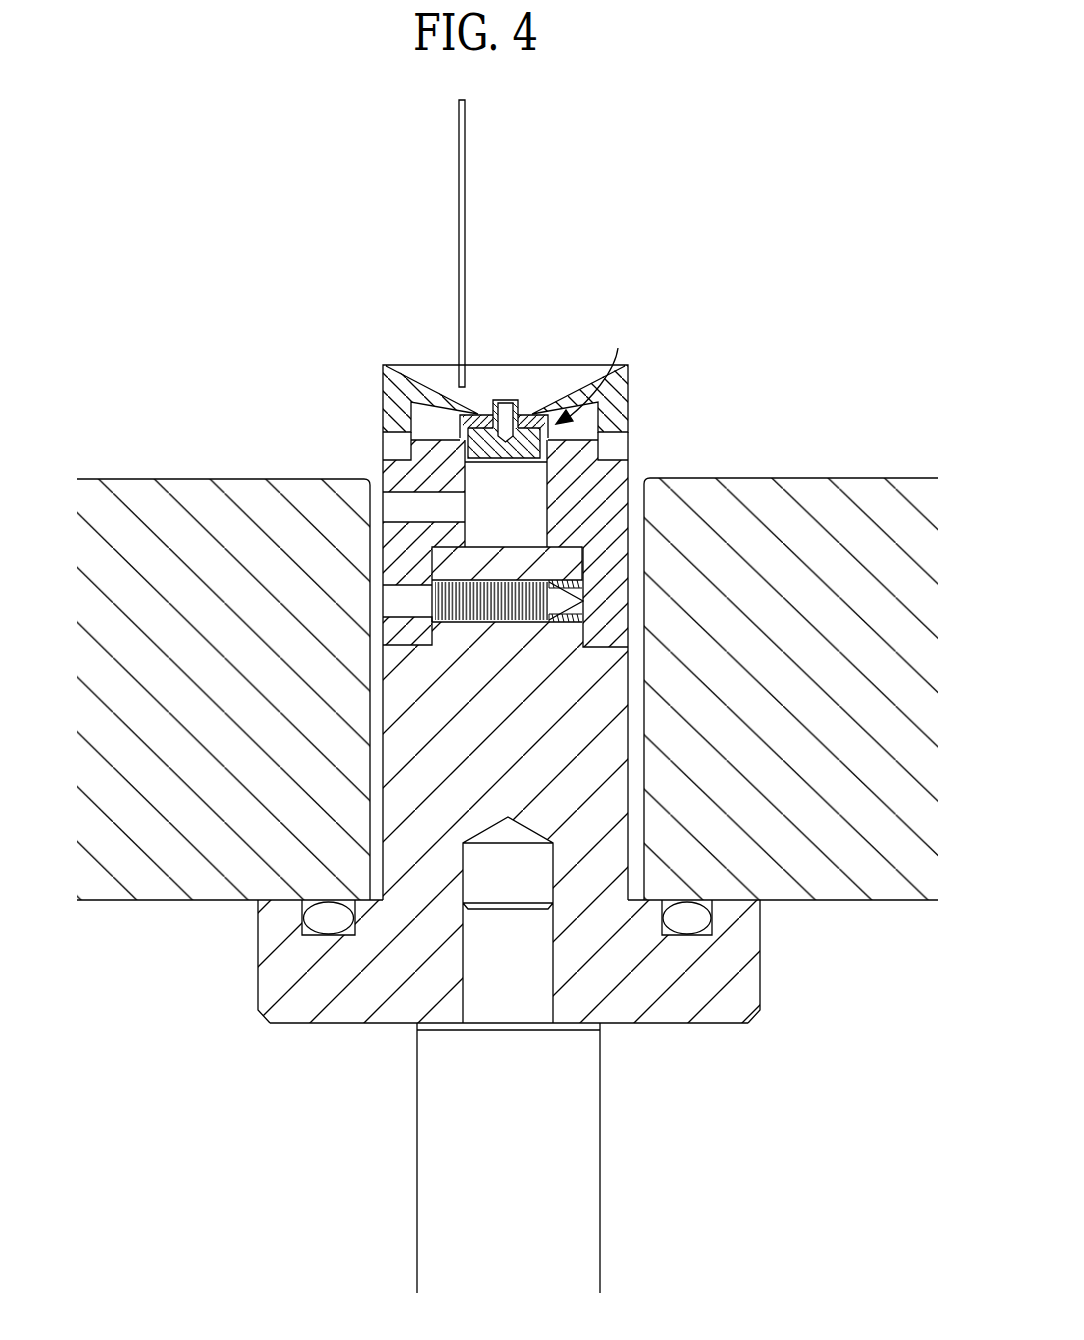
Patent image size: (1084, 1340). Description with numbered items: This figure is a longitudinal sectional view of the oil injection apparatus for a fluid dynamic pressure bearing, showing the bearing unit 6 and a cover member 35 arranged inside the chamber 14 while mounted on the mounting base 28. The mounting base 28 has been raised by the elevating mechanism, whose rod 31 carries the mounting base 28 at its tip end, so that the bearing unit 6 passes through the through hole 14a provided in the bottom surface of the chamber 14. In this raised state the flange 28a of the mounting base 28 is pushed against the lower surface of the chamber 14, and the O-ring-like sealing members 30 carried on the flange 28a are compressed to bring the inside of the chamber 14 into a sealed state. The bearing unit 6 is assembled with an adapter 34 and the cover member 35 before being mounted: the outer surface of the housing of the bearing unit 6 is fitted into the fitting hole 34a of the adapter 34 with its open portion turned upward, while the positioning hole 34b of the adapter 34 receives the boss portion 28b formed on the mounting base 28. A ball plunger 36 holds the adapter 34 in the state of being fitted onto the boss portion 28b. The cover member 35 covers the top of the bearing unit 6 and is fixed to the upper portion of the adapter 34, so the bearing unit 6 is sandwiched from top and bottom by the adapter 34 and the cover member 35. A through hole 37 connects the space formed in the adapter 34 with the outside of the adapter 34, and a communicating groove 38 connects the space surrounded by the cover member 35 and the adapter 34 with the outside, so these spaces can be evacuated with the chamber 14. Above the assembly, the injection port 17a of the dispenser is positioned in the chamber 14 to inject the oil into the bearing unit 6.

The bearing unit 6 is at (595, 370).
The chamber 14 is at (872, 885).
The through hole 14a is at (637, 500).
The injection port 17a is at (468, 393).
The mounting base 28 is at (509, 767).
The flange 28a is at (348, 1012).
The boss portion 28b is at (432, 630).
The sealing members 30 is at (315, 918).
The rod 31 is at (587, 1157).
The adapter 34 is at (512, 570).
The fitting hole 34a is at (540, 485).
The positioning hole 34b is at (436, 561).
The cover member 35 is at (628, 384).
The ball plunger 36 is at (555, 603).
The through hole 37 is at (384, 505).
The communicating groove 38 is at (386, 430).